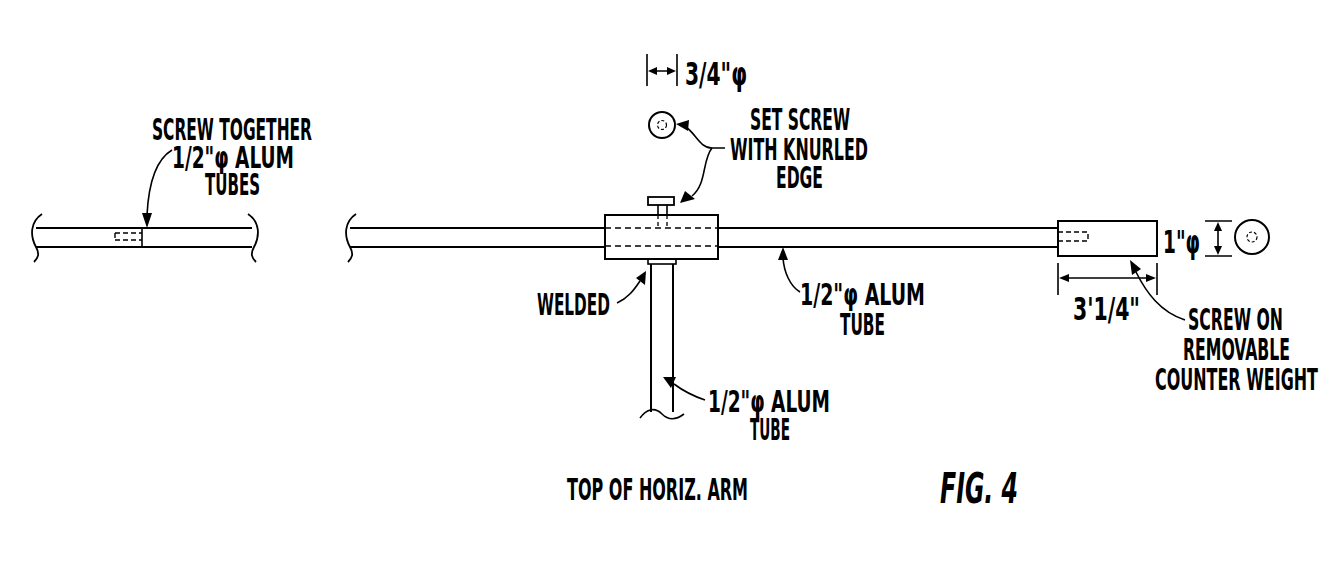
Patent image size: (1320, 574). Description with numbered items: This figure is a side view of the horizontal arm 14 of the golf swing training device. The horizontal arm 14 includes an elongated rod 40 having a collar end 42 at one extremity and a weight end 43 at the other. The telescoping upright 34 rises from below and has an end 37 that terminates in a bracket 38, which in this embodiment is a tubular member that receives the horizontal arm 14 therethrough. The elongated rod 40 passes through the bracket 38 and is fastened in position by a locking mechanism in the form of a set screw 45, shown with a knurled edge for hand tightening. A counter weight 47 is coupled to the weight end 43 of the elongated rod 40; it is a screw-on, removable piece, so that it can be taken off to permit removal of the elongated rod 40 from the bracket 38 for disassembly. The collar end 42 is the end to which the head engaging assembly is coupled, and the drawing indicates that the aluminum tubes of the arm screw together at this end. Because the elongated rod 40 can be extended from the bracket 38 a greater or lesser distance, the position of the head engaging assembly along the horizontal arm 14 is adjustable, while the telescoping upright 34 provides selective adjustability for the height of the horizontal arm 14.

The horizontal arm 14 is at (866, 222).
The telescoping upright 34 is at (660, 348).
The end 37 is at (676, 275).
The bracket 38 is at (615, 215).
The elongated rod 40 is at (466, 236).
The collar end 42 is at (58, 226).
The weight end 43 is at (1040, 228).
The set screw 45 is at (658, 197).
The counter weight 47 is at (1118, 235).